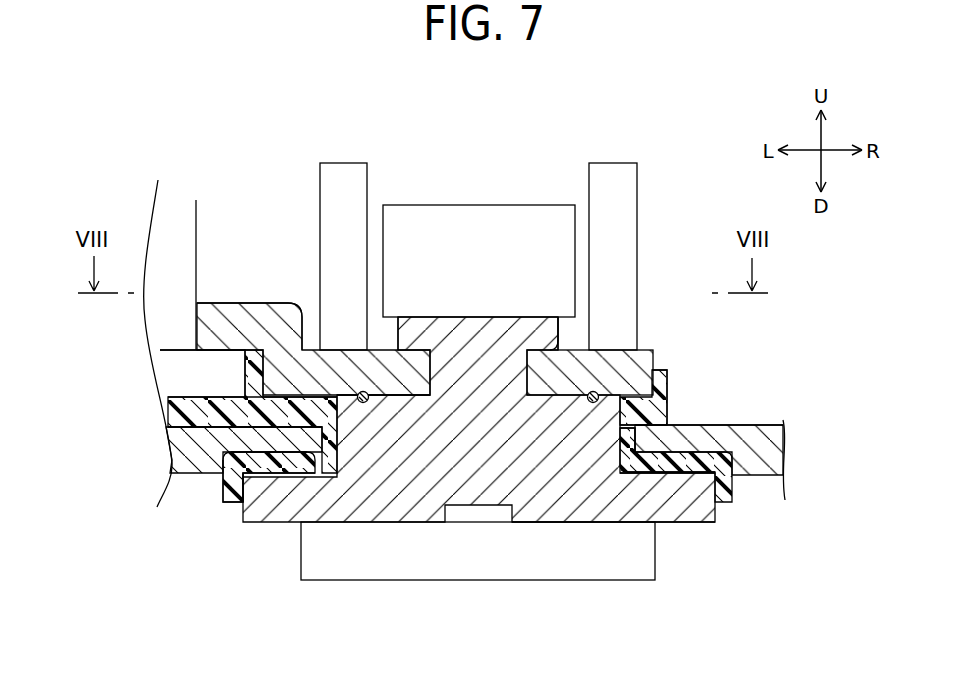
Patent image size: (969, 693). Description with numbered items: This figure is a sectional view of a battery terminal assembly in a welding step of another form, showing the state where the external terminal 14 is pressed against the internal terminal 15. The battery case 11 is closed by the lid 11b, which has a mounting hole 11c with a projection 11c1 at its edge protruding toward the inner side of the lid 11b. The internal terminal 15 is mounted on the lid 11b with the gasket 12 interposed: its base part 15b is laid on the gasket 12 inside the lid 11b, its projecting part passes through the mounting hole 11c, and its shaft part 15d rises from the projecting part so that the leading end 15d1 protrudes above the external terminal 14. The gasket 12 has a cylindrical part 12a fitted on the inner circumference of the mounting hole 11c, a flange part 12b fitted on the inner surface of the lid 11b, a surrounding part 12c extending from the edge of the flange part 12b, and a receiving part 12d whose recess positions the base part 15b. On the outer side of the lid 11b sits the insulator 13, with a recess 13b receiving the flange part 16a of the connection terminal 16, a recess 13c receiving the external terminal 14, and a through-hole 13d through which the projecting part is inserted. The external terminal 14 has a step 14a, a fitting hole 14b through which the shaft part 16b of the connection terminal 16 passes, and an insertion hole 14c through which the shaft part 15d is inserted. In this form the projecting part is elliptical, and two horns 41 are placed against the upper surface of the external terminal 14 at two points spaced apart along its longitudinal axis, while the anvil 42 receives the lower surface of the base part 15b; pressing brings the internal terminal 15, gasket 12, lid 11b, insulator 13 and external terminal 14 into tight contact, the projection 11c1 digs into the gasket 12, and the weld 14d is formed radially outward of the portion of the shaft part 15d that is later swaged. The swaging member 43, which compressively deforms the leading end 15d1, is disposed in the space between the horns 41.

The battery case 11 is at (768, 414).
The lid 11b is at (733, 425).
The mounting hole 11c is at (627, 476).
The projection 11c1 is at (660, 476).
The gasket 12 is at (742, 501).
The cylindrical part 12a is at (300, 475).
The flange part 12b is at (645, 445).
The surrounding part 12c is at (236, 500).
The receiving part 12d is at (266, 480).
The insulator 13 is at (681, 387).
The recess 13b is at (200, 397).
The recess 13c is at (660, 370).
The through-hole 13d is at (637, 428).
The external terminal 14 is at (656, 342).
The step 14a is at (303, 291).
The fitting hole 14b is at (197, 303).
The insertion hole 14c is at (430, 400).
The weld 14d is at (365, 404).
The internal terminal 15 is at (725, 523).
The base part 15b is at (687, 525).
The shaft part 15d is at (397, 345).
The leading end 15d1 is at (553, 318).
The connection terminal 16 is at (194, 179).
The flange part 16a is at (168, 350).
The shaft part 16b is at (197, 222).
The horn 41 is at (320, 205).
The anvil 42 is at (492, 582).
The swaging member 43 is at (540, 205).